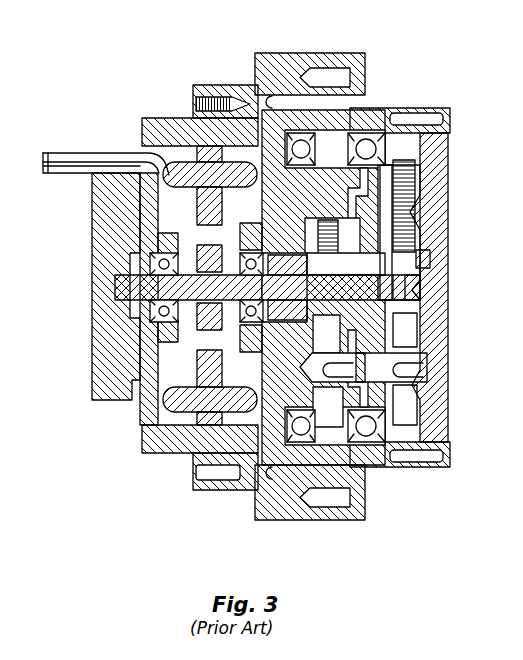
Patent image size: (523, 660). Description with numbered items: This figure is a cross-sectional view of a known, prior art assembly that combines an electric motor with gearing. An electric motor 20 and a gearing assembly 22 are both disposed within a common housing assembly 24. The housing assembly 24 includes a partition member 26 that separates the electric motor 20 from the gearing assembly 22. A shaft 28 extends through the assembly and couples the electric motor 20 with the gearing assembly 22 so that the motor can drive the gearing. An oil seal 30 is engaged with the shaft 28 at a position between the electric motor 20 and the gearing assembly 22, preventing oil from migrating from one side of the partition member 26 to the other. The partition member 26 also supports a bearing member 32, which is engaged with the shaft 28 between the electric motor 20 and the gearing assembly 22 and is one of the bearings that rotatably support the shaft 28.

The electric motor 20 is at (182, 172).
The gearing assembly 22 is at (405, 222).
The housing assembly 24 is at (165, 450).
The partition member 26 is at (292, 183).
The shaft 28 is at (130, 287).
The oil seal 30 is at (413, 284).
The bearing member 32 is at (424, 258).